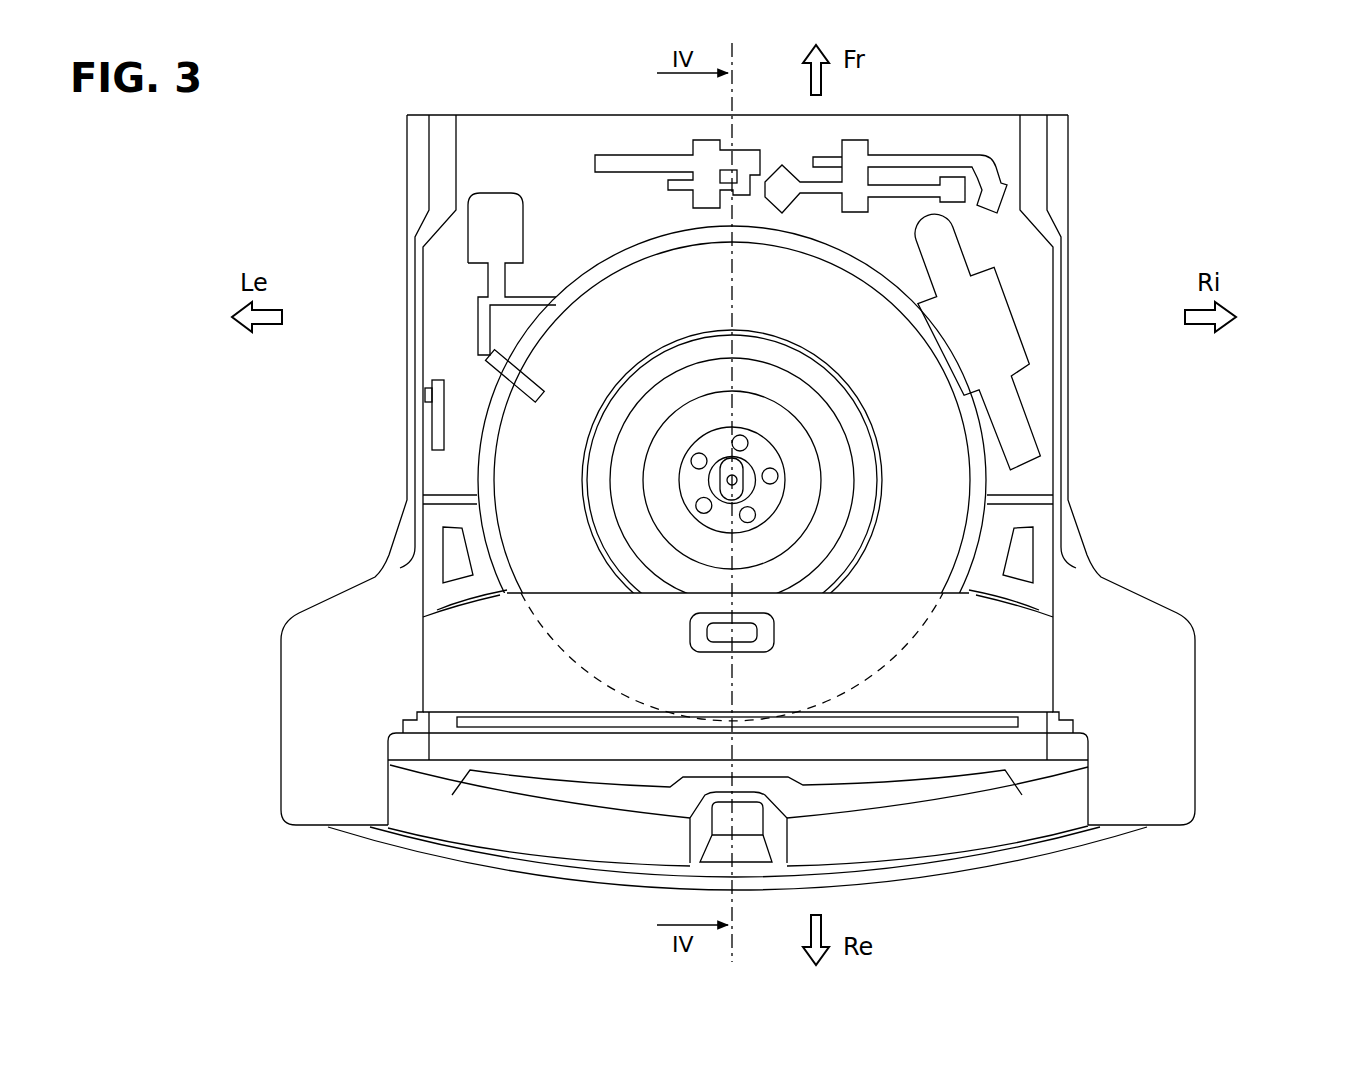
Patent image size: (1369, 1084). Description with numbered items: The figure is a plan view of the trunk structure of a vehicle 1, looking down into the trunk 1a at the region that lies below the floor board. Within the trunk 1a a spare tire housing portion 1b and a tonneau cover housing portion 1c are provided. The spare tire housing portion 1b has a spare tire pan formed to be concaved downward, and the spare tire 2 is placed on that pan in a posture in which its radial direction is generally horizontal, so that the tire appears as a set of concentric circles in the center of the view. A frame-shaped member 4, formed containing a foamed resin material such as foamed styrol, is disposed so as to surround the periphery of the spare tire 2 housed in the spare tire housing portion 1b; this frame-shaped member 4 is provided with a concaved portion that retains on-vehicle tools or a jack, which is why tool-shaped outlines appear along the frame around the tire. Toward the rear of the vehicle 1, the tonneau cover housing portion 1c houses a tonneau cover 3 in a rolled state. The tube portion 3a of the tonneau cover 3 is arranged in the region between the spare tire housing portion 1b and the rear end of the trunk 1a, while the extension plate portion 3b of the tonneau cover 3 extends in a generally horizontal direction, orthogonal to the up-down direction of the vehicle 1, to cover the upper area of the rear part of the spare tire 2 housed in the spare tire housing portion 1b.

The vehicle 1 is at (398, 111).
The trunk 1a is at (1012, 244).
The spare tire housing portion 1b is at (974, 456).
The tonneau cover housing portion 1c is at (476, 696).
The spare tire 2 is at (890, 367).
The tonneau cover 3 is at (1283, 585).
The tube portion 3a is at (1010, 746).
The extension plate portion 3b is at (1002, 665).
The frame-shaped member 4 is at (1000, 155).